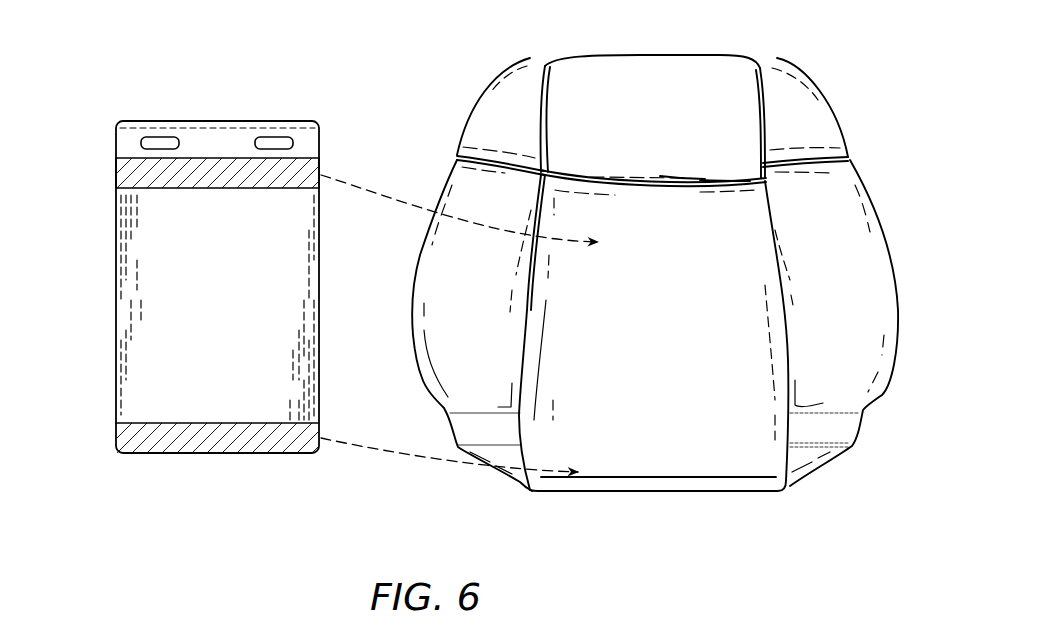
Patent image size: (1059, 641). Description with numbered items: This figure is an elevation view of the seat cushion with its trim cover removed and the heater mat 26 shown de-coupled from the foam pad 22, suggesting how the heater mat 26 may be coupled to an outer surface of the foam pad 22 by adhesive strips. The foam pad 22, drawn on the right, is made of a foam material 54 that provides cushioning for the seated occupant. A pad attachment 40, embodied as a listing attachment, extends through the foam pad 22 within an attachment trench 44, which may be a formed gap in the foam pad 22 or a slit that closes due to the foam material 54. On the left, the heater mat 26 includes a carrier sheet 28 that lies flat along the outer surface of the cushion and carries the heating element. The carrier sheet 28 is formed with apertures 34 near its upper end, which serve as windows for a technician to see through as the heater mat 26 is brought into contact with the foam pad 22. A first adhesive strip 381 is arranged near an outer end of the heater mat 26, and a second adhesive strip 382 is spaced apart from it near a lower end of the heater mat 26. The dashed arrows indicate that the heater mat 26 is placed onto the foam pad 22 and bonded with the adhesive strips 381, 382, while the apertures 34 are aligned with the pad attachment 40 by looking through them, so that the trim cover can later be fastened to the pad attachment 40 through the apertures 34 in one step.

The foam pad 22 is at (644, 278).
The heater mat 26 is at (180, 264).
The carrier sheet 28 is at (114, 286).
The apertures 34 is at (160, 137).
The pad attachment 40 is at (688, 174).
The attachment trench 44 is at (716, 174).
The foam material 54 is at (665, 492).
The first adhesive strip 381 is at (115, 175).
The second adhesive strip 382 is at (115, 434).